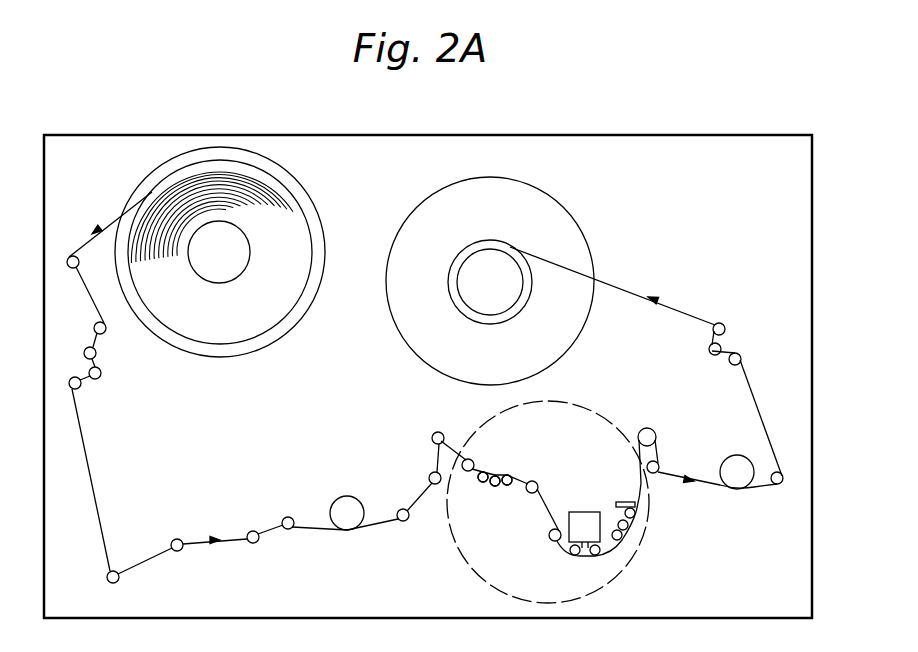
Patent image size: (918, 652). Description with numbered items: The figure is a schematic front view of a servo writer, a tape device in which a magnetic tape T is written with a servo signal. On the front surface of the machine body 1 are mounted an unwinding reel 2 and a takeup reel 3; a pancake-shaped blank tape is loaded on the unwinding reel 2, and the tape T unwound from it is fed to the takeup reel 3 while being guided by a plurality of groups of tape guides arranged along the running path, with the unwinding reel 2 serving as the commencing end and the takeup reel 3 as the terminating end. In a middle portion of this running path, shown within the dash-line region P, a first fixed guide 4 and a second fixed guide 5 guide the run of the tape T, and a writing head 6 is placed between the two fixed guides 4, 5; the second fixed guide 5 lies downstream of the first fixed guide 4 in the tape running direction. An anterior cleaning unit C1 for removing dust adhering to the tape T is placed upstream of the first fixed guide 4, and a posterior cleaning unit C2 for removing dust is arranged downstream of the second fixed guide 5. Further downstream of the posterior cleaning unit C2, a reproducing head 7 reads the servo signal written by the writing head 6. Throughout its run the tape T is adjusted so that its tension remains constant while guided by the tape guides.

The machine body 1 is at (655, 136).
The unwinding reel 2 is at (313, 203).
The takeup reel 3 is at (408, 215).
The first fixed guide 4 is at (565, 550).
The second fixed guide 5 is at (597, 558).
The writing head 6 is at (583, 557).
The reproducing head 7 is at (618, 501).
The anterior cleaning unit C1 is at (490, 459).
The posterior cleaning unit C2 is at (642, 528).
The processing region P is at (594, 402).
The magnetic tape T is at (382, 530).